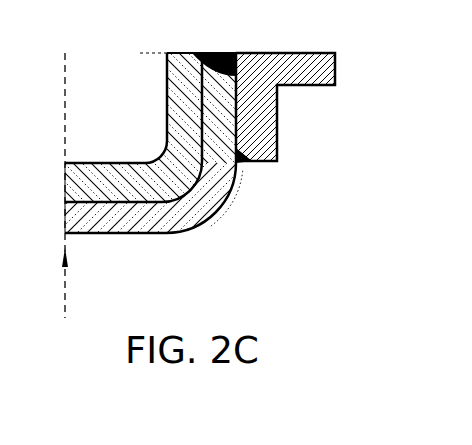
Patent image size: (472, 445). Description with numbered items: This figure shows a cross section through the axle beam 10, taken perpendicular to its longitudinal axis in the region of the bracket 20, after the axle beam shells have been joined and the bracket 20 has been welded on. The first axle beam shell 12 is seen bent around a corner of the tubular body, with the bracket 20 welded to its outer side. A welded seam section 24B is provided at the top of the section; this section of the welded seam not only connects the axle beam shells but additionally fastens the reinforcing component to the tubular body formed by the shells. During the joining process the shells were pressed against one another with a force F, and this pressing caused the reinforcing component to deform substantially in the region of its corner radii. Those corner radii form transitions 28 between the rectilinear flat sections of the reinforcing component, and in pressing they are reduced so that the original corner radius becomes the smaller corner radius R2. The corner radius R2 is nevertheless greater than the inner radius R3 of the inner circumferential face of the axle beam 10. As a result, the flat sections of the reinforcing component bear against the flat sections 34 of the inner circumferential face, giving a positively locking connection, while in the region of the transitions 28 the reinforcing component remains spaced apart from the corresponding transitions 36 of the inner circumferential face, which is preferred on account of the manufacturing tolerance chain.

The axle beam 10 is at (125, 23).
The first axle beam shell 12 is at (149, 236).
The bracket 20 is at (315, 87).
The welded seam section 24B is at (185, 92).
The transitions 28 is at (160, 163).
The flat sections 34 is at (83, 236).
The transitions 36 is at (193, 168).
The corner radius R2 is at (177, 186).
The inner radius R3 is at (194, 200).
The force F is at (61, 185).